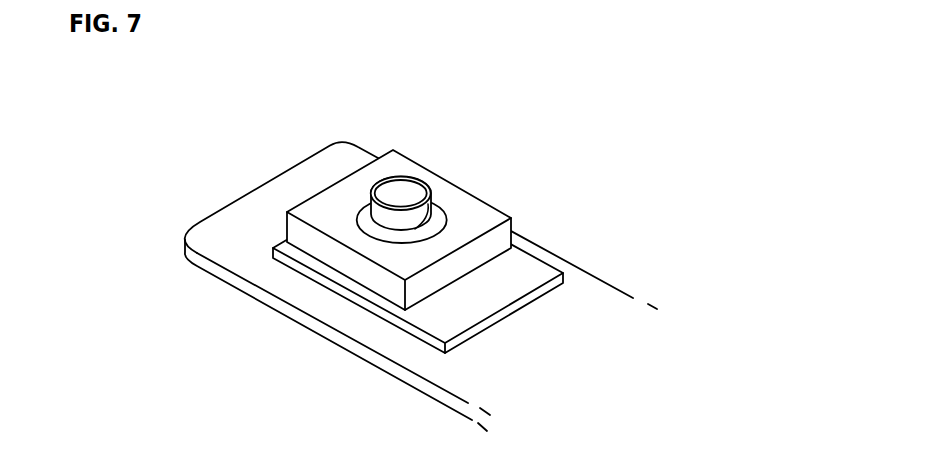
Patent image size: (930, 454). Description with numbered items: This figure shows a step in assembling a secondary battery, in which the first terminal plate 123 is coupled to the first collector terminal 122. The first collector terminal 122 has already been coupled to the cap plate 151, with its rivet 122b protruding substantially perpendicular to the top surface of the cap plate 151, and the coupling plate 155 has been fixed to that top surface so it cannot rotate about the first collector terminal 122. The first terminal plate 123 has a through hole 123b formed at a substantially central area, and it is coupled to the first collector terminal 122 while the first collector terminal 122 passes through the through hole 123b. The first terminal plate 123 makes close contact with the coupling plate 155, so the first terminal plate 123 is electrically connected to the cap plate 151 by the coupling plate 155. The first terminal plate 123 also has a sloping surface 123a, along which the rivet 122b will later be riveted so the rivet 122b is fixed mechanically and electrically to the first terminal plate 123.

The cap plate 151 is at (252, 212).
The coupling plate 155 is at (526, 276).
The first collector terminal 122 is at (354, 250).
The rivet 122b is at (386, 221).
The first terminal plate 123 is at (392, 297).
The sloping surface 123a is at (362, 220).
The through hole 123b is at (430, 203).